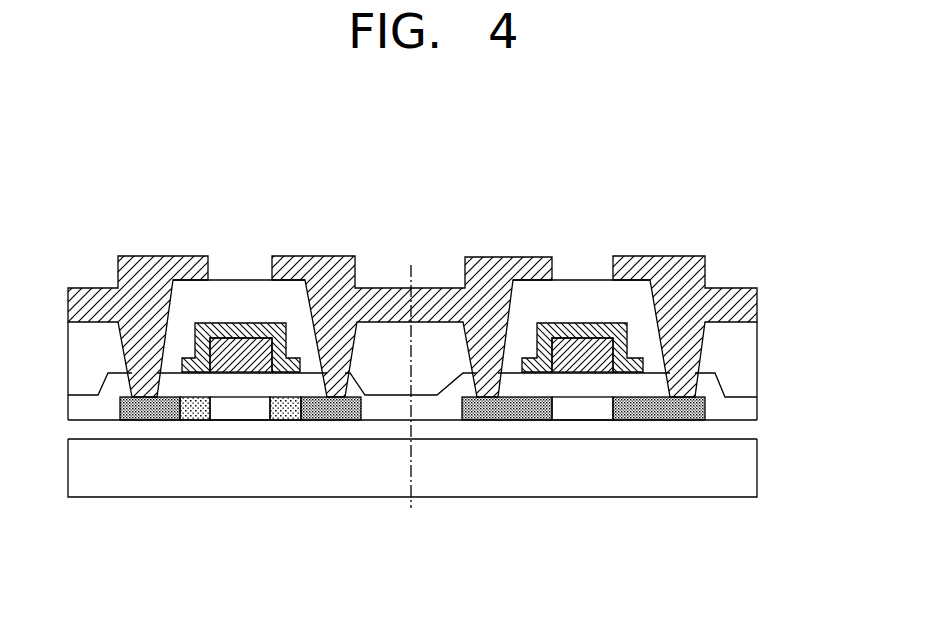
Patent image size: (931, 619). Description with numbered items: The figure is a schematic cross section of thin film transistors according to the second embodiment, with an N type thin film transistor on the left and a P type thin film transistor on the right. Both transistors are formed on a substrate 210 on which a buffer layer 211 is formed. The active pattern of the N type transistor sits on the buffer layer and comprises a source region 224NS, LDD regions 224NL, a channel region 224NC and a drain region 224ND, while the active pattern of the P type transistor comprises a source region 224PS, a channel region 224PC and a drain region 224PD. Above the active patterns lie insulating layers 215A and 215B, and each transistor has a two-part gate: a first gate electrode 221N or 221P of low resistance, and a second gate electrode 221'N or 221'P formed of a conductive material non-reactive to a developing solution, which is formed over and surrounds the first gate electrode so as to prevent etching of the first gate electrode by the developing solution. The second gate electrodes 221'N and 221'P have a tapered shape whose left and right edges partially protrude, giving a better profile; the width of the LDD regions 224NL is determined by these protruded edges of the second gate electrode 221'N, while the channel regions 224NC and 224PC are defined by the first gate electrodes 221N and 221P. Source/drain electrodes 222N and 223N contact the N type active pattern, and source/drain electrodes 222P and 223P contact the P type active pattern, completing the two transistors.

The substrate 210 is at (750, 465).
The buffer layer 211 is at (750, 432).
The gate insulating layer 215A is at (750, 403).
The interlayer insulating layer 215B is at (750, 360).
The first gate electrode 221N is at (225, 337).
The second gate electrode 221'N is at (243, 279).
The source/drain electrode 222N is at (162, 256).
The source/drain electrode 223N is at (337, 256).
The first gate electrode 221P is at (597, 338).
The second gate electrode 221'P is at (581, 279).
The source/drain electrode 222P is at (483, 257).
The source/drain electrode 223P is at (660, 256).
The source region 224NS is at (143, 420).
The LDD regions 224NL is at (188, 416).
The channel region 224NC is at (238, 413).
The drain region 224ND is at (335, 420).
The source region 224PS is at (487, 420).
The channel region 224PC is at (580, 413).
The drain region 224PD is at (658, 413).